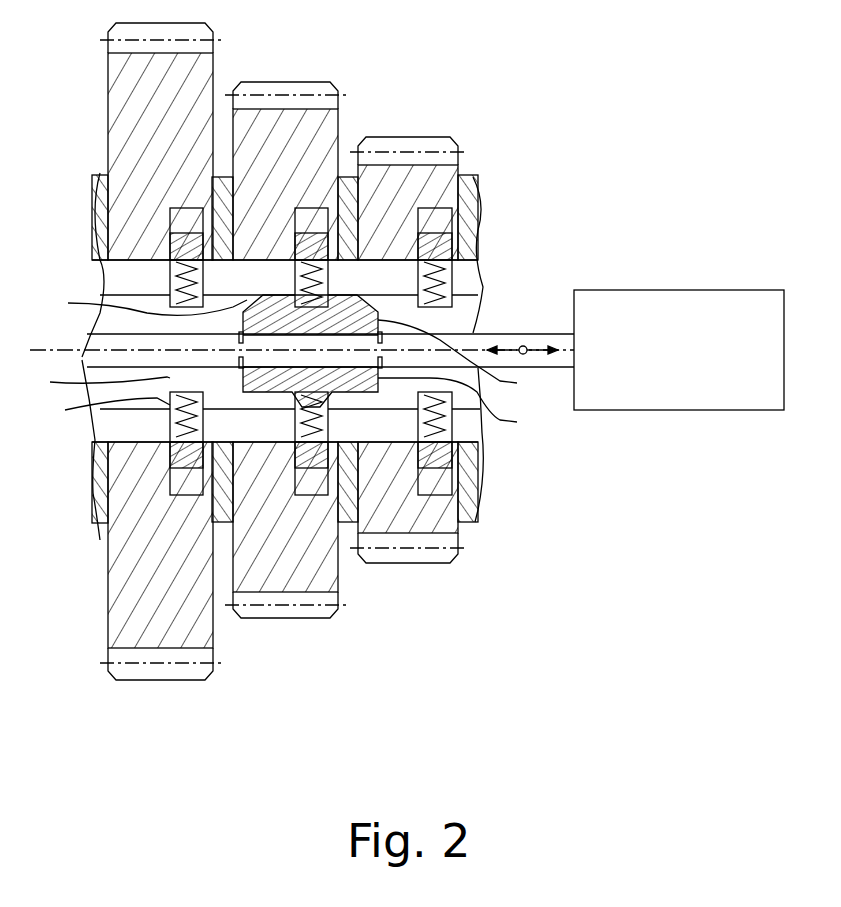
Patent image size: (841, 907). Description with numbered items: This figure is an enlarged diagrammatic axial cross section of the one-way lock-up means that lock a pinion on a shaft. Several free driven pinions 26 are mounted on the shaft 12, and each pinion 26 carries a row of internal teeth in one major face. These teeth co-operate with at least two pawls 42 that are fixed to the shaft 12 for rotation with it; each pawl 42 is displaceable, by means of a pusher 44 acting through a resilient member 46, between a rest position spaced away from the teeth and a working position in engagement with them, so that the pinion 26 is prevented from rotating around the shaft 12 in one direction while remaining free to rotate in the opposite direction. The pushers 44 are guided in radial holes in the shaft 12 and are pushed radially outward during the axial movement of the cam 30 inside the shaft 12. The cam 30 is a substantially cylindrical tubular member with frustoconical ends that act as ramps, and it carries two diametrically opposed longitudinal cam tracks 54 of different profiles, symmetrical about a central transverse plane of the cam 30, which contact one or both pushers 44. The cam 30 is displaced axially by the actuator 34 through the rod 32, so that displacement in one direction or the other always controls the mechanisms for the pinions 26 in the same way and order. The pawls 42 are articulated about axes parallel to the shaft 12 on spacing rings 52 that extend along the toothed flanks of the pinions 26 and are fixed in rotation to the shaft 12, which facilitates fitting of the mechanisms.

The shaft 12 is at (118, 273).
The pinion 26 is at (107, 132).
The cam 30 is at (243, 322).
The rod 32 is at (515, 334).
The actuator 34 is at (672, 290).
The pawl 42 is at (311, 217).
The pusher 44 is at (508, 264).
The resilient member 46 is at (101, 412).
The spacing ring 52 is at (213, 520).
The cam track 54 is at (461, 378).